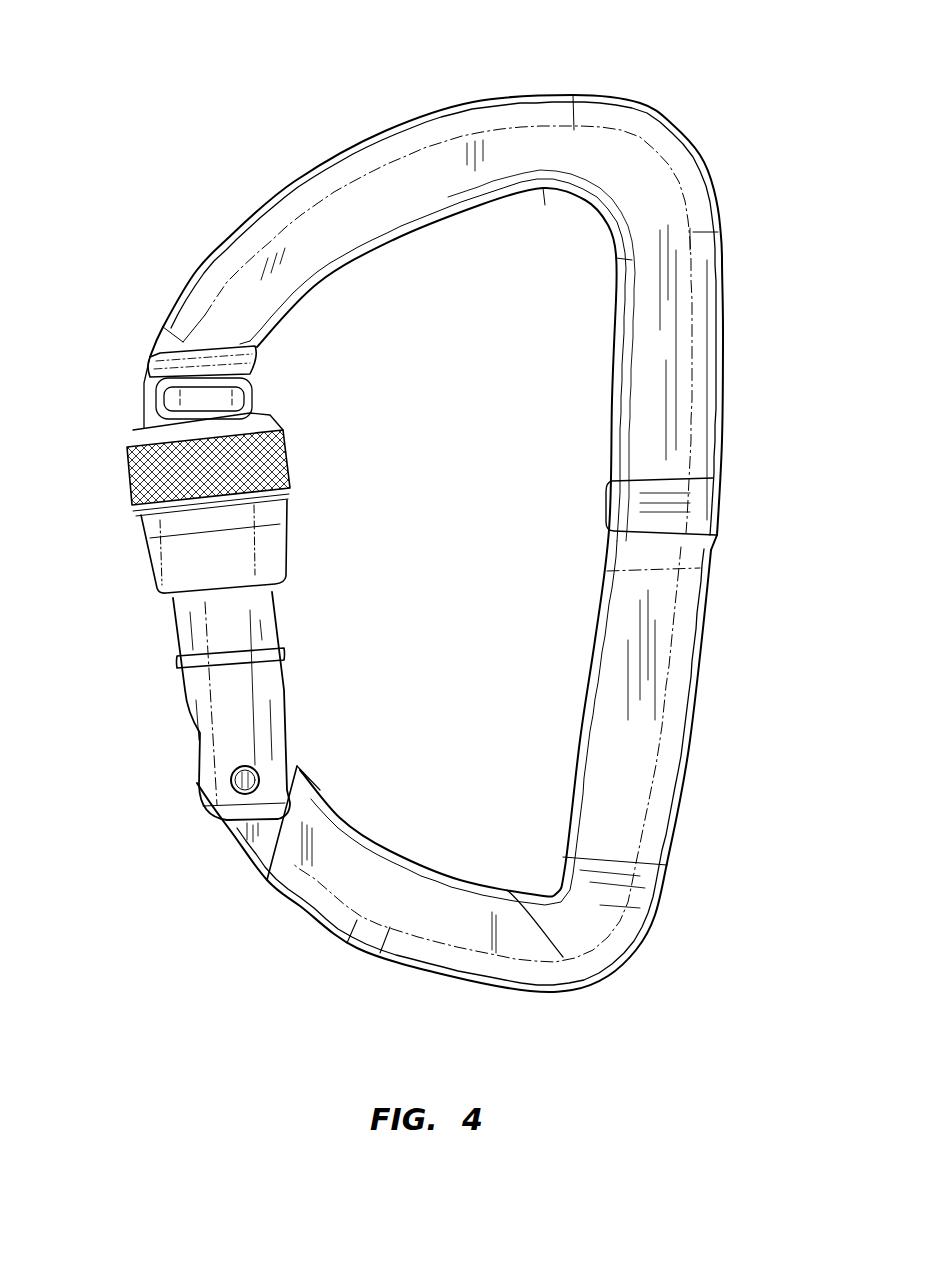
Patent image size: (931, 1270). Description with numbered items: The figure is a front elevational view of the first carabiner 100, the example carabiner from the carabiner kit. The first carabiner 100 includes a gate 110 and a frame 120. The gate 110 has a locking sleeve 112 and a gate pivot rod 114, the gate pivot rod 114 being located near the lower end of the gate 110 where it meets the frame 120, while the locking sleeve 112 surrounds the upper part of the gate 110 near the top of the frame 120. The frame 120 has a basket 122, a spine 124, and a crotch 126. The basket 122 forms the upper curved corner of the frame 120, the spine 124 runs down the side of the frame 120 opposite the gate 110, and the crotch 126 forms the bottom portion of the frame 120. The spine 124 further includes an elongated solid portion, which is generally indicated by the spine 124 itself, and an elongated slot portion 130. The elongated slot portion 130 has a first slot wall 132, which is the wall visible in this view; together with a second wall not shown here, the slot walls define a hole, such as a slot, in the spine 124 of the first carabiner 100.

The first carabiner 100 is at (205, 78).
The gate 110 is at (218, 697).
The locking sleeve 112 is at (128, 484).
The gate pivot rod 114 is at (233, 778).
The frame 120 is at (400, 172).
The basket 122 is at (637, 168).
The spine 124 is at (683, 422).
The crotch 126 is at (463, 942).
The elongated slot portion 130 is at (697, 770).
The first slot wall 132 is at (667, 617).